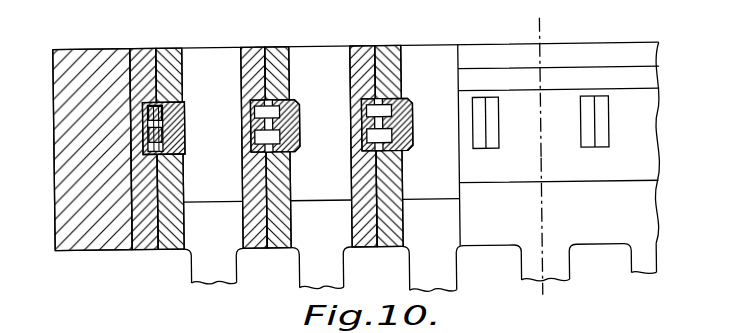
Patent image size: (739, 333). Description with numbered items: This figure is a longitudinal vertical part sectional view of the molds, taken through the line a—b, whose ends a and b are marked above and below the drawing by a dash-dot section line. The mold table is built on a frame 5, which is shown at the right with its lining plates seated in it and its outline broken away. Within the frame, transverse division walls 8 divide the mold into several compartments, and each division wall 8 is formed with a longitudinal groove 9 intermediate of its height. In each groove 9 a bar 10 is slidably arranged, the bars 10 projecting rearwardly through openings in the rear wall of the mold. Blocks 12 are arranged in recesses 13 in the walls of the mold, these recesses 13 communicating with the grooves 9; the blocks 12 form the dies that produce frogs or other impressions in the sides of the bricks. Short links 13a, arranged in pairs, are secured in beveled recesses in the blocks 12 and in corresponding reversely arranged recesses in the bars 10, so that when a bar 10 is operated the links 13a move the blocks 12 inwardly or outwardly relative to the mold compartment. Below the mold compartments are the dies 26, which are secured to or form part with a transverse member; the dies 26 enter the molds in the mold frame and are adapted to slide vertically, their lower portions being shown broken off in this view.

The frame 5 is at (646, 208).
The transverse division wall 8 is at (282, 232).
The longitudinal groove 9 is at (142, 143).
The bar 10 is at (148, 128).
The block 12 is at (184, 123).
The recess 13 is at (178, 100).
The short link 13a is at (157, 143).
The die 26 is at (200, 230).
The section line end a is at (542, 79).
The section line end b is at (543, 241).